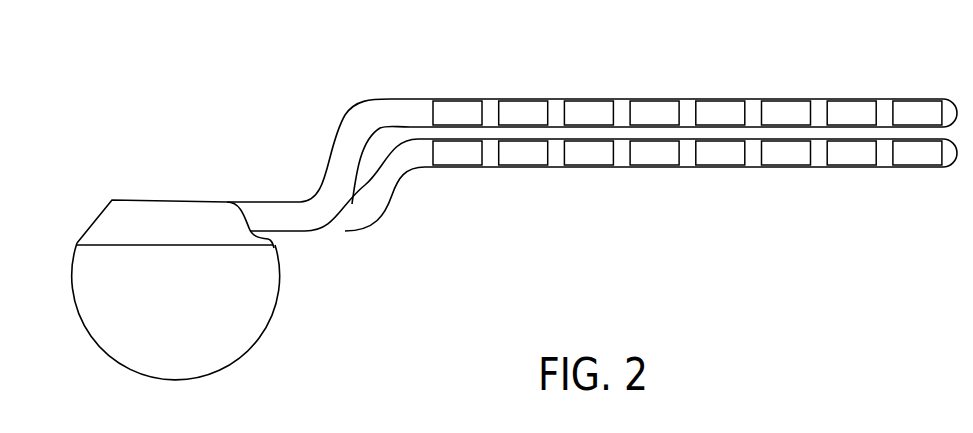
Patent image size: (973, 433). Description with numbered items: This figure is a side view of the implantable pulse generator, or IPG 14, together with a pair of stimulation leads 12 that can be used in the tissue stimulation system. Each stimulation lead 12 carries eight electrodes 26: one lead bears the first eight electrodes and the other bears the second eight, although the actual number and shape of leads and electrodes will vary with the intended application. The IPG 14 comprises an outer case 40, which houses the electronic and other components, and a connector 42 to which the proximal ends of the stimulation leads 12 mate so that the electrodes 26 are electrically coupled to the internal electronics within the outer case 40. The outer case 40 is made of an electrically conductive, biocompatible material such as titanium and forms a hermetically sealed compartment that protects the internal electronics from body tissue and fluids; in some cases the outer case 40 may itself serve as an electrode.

The IPG 14 is at (117, 169).
The stimulation leads 12 is at (413, 150).
The electrodes 26 is at (527, 97).
The outer case 40 is at (278, 302).
The connector 42 is at (184, 203).